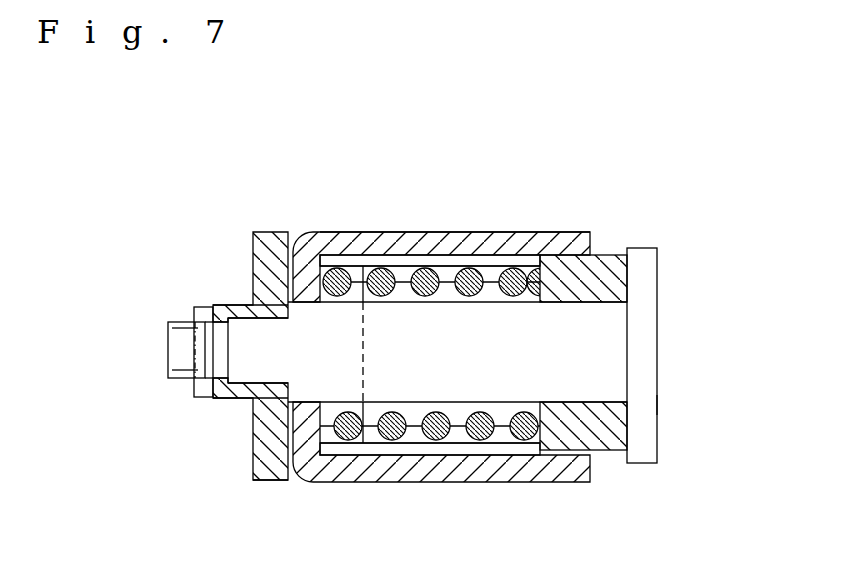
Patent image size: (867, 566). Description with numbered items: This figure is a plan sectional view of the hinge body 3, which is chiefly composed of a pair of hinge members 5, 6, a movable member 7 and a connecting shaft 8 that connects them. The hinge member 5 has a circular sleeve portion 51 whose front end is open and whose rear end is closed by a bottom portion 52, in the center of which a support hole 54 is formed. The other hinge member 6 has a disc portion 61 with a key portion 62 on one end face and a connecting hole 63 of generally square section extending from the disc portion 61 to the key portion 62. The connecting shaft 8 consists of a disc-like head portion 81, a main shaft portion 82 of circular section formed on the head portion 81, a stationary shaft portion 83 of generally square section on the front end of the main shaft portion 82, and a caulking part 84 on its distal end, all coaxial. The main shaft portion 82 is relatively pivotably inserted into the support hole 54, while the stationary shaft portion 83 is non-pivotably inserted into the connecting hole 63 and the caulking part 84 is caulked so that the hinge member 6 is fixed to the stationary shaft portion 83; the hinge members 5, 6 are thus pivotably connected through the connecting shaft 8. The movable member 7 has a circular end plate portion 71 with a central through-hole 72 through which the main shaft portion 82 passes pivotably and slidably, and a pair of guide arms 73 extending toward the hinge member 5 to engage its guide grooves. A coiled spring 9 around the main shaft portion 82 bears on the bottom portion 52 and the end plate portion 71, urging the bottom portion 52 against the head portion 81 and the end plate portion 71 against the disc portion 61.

The hinge body 3 is at (448, 228).
The hinge member 5 is at (606, 251).
The hinge member 6 is at (273, 228).
The movable member 7 is at (397, 228).
The connecting shaft 8 is at (661, 338).
The coiled spring 9 is at (482, 432).
The circular sleeve portion 51 is at (410, 405).
The bottom portion 52 is at (600, 447).
The support hole 54 is at (580, 312).
The disc portion 61 is at (263, 480).
The key portion 62 is at (222, 398).
The connecting hole 63 is at (250, 302).
The end plate portion 71 is at (300, 425).
The through-hole 72 is at (316, 306).
The guide arms 73 is at (503, 250).
The head portion 81 is at (658, 405).
The main shaft portion 82 is at (593, 330).
The stationary shaft portion 83 is at (257, 328).
The caulking part 84 is at (168, 325).